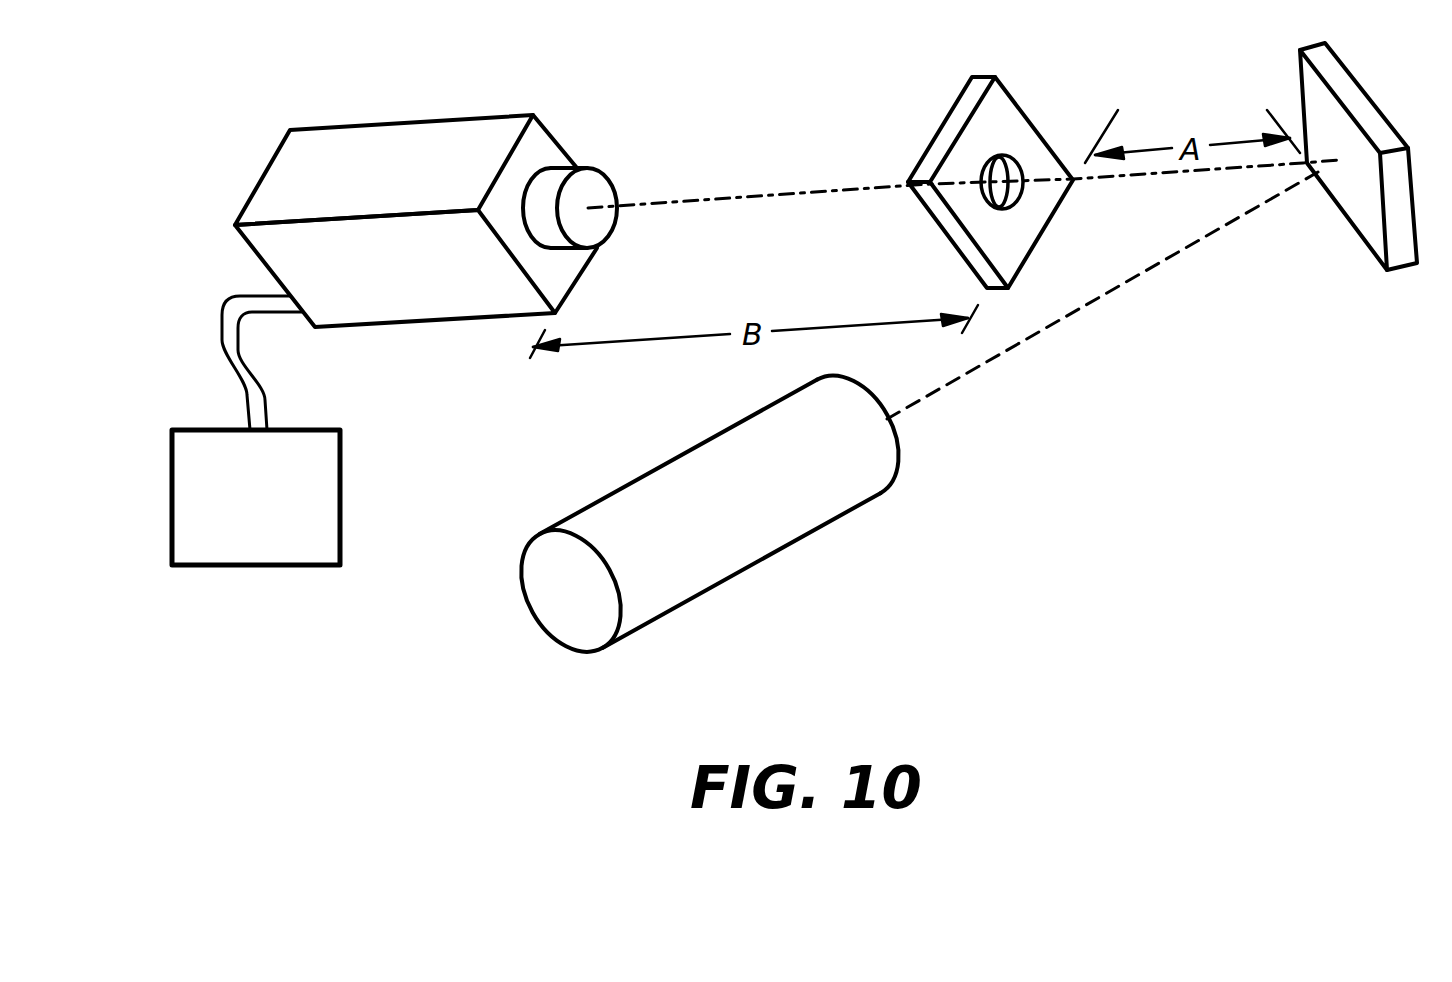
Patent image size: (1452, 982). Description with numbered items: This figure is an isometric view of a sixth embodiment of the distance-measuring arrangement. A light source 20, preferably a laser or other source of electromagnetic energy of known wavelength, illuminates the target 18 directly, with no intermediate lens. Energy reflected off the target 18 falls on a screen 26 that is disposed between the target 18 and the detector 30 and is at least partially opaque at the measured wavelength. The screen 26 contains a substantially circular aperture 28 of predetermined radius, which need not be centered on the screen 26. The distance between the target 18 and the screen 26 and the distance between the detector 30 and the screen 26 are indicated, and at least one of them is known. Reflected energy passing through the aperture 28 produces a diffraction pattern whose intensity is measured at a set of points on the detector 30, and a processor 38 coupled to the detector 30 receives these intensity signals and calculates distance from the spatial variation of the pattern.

The target 18 is at (1352, 98).
The light source 20 is at (610, 508).
The screen 26 is at (958, 118).
The aperture 28 is at (1010, 175).
The detector 30 is at (458, 113).
The processor 38 is at (270, 567).